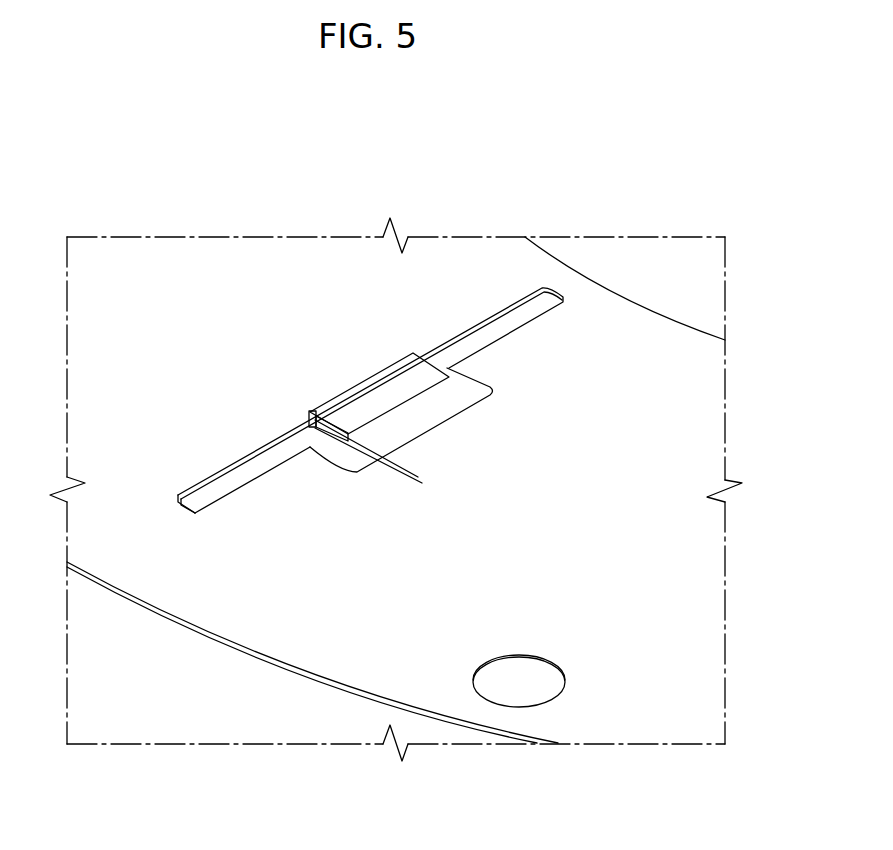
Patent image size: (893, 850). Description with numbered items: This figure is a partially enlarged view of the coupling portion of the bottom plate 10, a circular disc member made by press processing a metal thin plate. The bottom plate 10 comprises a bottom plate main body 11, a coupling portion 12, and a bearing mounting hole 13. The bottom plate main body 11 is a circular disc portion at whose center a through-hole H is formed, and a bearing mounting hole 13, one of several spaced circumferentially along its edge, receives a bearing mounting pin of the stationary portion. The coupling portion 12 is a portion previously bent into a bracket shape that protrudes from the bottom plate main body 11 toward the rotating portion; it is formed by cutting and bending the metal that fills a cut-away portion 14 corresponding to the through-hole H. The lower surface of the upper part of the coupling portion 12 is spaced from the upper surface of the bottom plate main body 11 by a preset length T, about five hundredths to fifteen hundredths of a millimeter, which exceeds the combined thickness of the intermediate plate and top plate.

The bottom plate 10 is at (192, 648).
The bottom plate main body 11 is at (315, 650).
The coupling portion 12 is at (372, 398).
The bearing mounting hole 13 is at (545, 657).
The cut-away portion 14 is at (448, 423).
The through-hole H is at (618, 297).
The preset length T is at (415, 448).